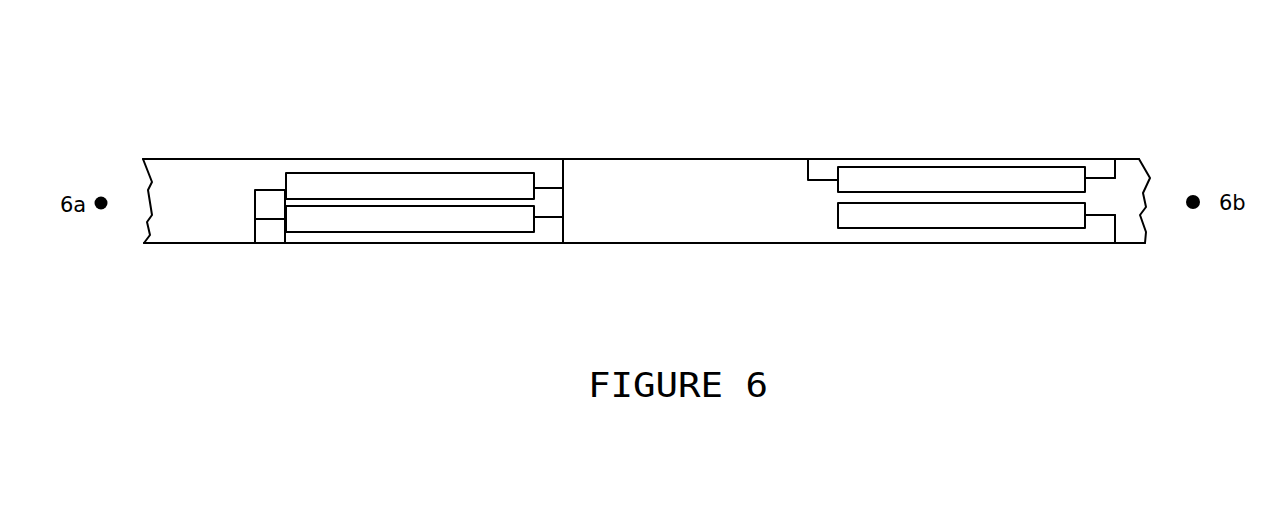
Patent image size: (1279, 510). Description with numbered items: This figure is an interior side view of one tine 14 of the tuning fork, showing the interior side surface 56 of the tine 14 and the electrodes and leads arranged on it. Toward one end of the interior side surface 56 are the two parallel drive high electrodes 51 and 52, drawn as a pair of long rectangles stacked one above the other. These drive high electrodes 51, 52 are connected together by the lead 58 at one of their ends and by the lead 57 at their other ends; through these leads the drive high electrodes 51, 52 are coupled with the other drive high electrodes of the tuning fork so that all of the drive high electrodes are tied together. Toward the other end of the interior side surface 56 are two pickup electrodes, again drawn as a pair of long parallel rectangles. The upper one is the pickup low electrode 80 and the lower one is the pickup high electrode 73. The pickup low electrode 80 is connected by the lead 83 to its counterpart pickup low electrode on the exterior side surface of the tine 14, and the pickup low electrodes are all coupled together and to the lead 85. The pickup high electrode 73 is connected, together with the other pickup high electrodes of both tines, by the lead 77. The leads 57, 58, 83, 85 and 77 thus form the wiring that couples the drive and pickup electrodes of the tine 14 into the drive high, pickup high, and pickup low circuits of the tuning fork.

The tine 14 is at (688, 157).
The lead 58 is at (253, 207).
The drive high electrode 52 is at (328, 183).
The drive high electrode 51 is at (316, 219).
The lead 57 is at (565, 172).
The interior side surface 56 is at (598, 212).
The lead 83 is at (807, 167).
The pickup low electrode 80 is at (915, 178).
The pickup high electrode 73 is at (953, 215).
The lead 85 is at (1117, 167).
The lead 77 is at (1117, 227).